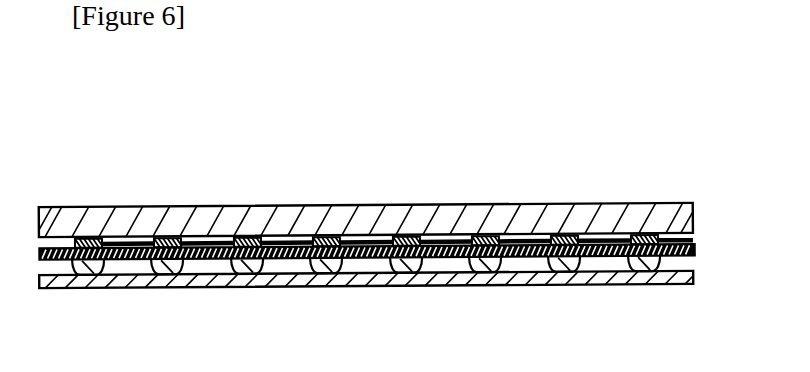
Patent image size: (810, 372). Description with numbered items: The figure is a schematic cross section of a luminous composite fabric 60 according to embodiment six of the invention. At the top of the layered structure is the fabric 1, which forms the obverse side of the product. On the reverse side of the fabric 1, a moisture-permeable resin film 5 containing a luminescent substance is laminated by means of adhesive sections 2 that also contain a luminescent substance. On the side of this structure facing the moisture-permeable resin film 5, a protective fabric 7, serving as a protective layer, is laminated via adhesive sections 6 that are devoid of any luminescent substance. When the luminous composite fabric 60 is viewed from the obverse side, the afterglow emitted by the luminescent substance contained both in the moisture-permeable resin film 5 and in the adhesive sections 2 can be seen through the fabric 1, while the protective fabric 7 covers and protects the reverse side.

The luminous composite fabric 60 is at (642, 148).
The fabric 1 is at (194, 206).
The adhesive sections 2 is at (275, 258).
The moisture-permeable resin film 5 is at (190, 287).
The adhesive sections 6 is at (428, 284).
The protective fabric 7 is at (560, 285).